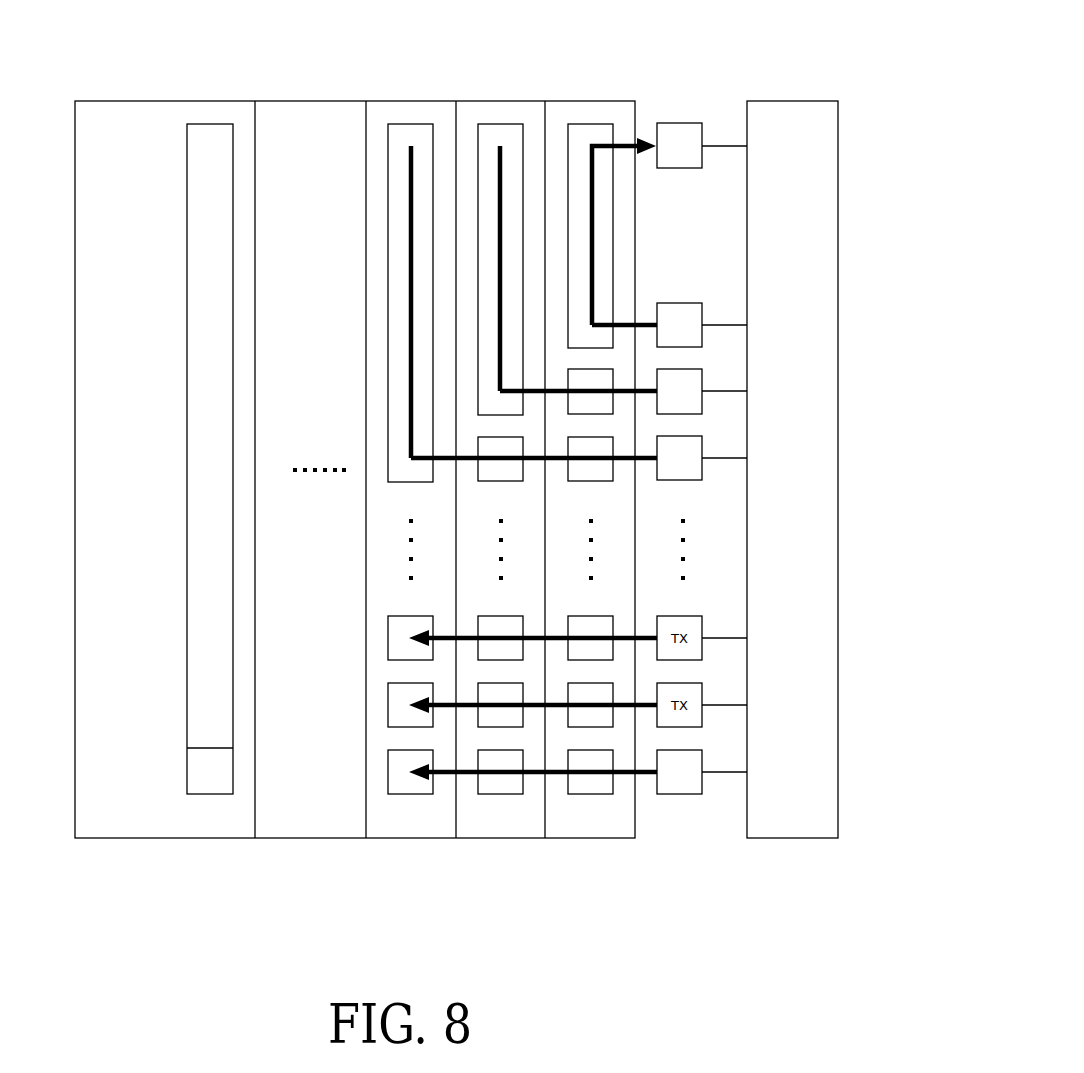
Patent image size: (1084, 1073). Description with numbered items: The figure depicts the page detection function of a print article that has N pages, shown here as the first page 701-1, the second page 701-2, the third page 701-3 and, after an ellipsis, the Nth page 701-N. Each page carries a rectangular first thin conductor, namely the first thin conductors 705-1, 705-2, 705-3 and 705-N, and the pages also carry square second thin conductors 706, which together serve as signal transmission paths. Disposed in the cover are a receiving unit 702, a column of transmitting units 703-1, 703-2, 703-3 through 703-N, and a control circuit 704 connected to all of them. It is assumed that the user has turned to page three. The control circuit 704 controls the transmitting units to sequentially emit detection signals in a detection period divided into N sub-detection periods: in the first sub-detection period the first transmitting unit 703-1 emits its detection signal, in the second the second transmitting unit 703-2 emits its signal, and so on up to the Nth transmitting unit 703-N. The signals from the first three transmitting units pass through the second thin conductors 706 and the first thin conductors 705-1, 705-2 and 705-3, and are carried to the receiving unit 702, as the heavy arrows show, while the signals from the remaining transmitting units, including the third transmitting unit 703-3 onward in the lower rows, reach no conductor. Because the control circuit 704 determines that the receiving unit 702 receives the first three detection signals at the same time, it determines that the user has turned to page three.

The Nth page 701-N is at (180, 481).
The third page 701-3 is at (411, 478).
The second page 701-2 is at (492, 475).
The first page 701-1 is at (600, 481).
The receiving unit 702 is at (680, 123).
The first transmitting unit 703-1 is at (685, 303).
The second transmitting unit 703-2 is at (657, 369).
The third transmitting unit 703-3 is at (700, 481).
The Nth transmitting unit 703-N is at (701, 795).
The control circuit 704 is at (793, 113).
The first thin conductor of the Nth page 705-N is at (210, 129).
The first thin conductor of the third page 705-3 is at (411, 129).
The first thin conductor of the second page 705-2 is at (495, 129).
The first thin conductor of the first page 705-1 is at (595, 129).
The second thin conductor 706 is at (501, 795).